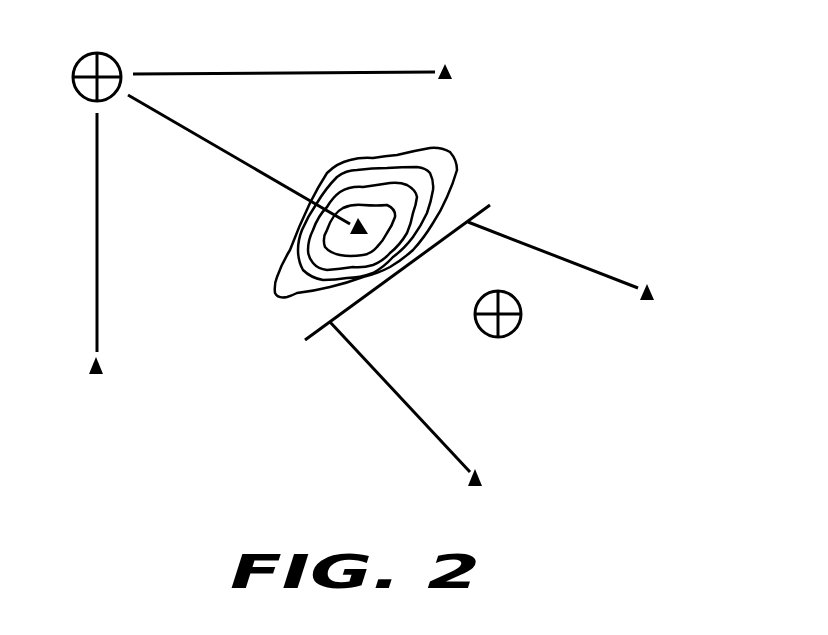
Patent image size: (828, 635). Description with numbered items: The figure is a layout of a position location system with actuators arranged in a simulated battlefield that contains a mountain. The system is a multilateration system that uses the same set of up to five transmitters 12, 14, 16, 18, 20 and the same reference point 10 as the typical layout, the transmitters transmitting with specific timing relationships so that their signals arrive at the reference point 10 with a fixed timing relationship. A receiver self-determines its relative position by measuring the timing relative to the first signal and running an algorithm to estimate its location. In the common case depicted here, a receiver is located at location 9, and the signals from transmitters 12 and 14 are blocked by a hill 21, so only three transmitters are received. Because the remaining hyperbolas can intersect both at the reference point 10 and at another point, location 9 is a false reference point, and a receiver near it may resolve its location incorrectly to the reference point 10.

The false location 9 is at (74, 67).
The reference point 10 is at (510, 337).
The transmitter 12 is at (475, 486).
The transmitter 14 is at (647, 300).
The transmitter 16 is at (97, 374).
The transmitter 18 is at (352, 232).
The transmitter 20 is at (445, 79).
The hill 21 is at (433, 165).